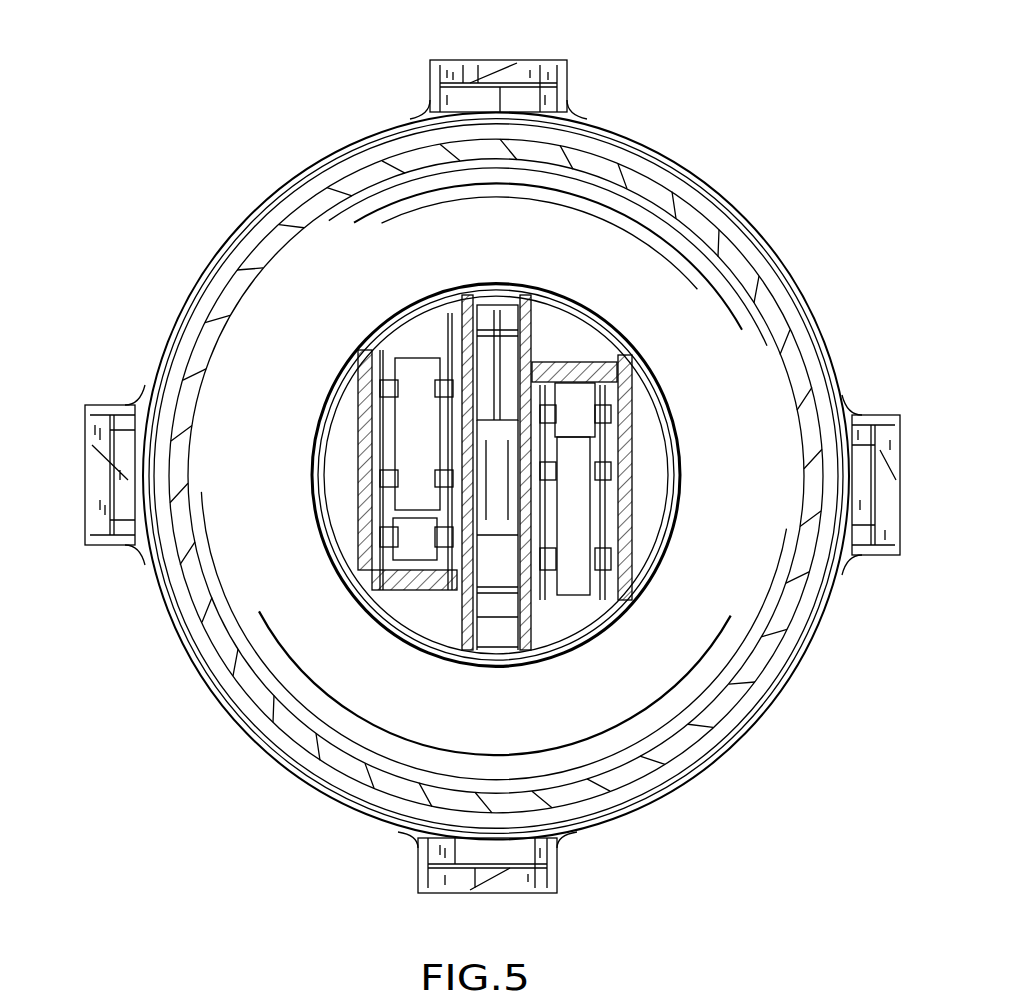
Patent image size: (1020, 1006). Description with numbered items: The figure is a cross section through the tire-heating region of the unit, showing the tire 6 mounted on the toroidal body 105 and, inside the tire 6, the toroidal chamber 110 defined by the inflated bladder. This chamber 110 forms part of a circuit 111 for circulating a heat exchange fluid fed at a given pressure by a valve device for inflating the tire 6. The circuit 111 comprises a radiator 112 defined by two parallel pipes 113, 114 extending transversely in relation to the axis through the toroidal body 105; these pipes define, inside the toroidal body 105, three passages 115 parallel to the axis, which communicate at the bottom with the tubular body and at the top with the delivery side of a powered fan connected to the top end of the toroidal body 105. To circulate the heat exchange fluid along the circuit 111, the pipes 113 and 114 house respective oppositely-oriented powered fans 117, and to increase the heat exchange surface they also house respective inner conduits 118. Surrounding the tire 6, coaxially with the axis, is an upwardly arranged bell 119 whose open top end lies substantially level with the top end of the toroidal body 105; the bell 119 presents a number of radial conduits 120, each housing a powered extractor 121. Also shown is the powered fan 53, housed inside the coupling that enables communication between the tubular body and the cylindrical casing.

The tire 6 is at (678, 206).
The powered fan 53 is at (498, 312).
The toroidal body 105 is at (664, 444).
The toroidal chamber 110 is at (730, 276).
The circuit 111 is at (710, 220).
The radiator 112 is at (385, 326).
The pipe 113 is at (368, 468).
The pipe 114 is at (625, 485).
The passages 115 is at (640, 394).
The powered fans 117 is at (575, 362).
The inner conduits 118 is at (403, 443).
The bell 119 is at (783, 258).
The radial conduits 120 is at (567, 96).
The powered extractor 121 is at (527, 72).